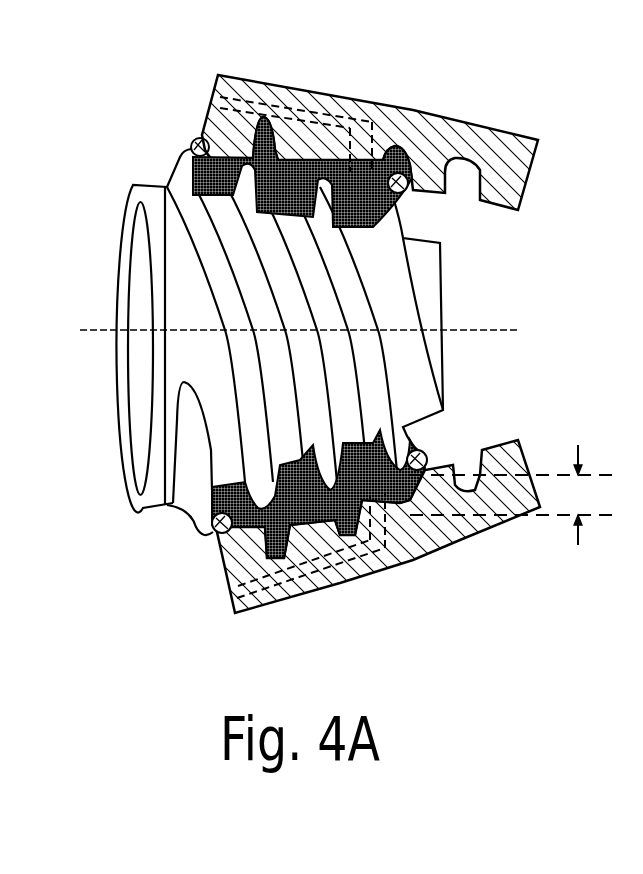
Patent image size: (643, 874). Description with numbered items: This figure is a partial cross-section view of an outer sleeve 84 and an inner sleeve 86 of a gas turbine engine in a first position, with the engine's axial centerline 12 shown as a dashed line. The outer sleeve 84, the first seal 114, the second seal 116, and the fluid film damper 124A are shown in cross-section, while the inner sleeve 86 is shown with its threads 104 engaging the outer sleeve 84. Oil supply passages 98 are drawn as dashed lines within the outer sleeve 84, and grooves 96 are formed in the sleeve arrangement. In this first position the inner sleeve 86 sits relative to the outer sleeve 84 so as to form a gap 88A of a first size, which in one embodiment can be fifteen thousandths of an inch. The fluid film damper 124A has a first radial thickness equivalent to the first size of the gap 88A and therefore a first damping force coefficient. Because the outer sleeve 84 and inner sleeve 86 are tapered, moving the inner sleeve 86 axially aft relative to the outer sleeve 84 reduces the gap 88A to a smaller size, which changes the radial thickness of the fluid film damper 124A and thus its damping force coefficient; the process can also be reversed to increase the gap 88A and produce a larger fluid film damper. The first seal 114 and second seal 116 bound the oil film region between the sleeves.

The axial centerline 12 is at (475, 330).
The outer sleeve 84 is at (443, 115).
The inner sleeve 86 is at (133, 183).
The gap 88A is at (582, 466).
The grooves 96 is at (283, 563).
The oil supply passages 98 is at (300, 112).
The threads 104 is at (167, 185).
The first seal 114 is at (218, 533).
The second seal 116 is at (410, 192).
The fluid film damper 124A is at (358, 190).